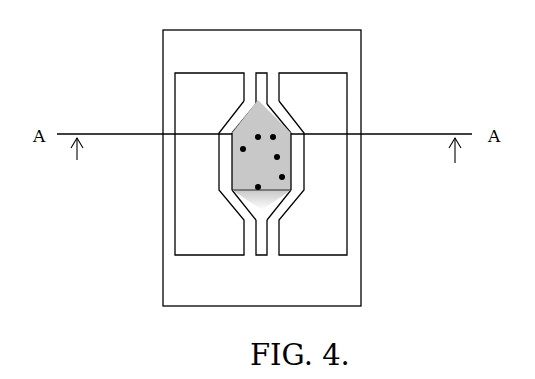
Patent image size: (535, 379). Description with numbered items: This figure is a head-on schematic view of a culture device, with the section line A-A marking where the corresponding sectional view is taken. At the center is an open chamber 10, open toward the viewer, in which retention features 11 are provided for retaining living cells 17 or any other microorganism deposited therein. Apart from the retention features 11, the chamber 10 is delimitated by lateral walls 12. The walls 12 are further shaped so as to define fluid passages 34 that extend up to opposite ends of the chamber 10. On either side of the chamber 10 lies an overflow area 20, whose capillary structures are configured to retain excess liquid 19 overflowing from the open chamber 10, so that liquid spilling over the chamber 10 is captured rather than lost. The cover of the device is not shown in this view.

The open chamber 10 is at (272, 167).
The retention features 11 is at (294, 134).
The lateral walls 12 is at (293, 163).
The living cells 17 is at (243, 149).
The excess liquid 19 is at (255, 118).
The overflow area 20 is at (202, 220).
The fluid passages 34 is at (260, 75).